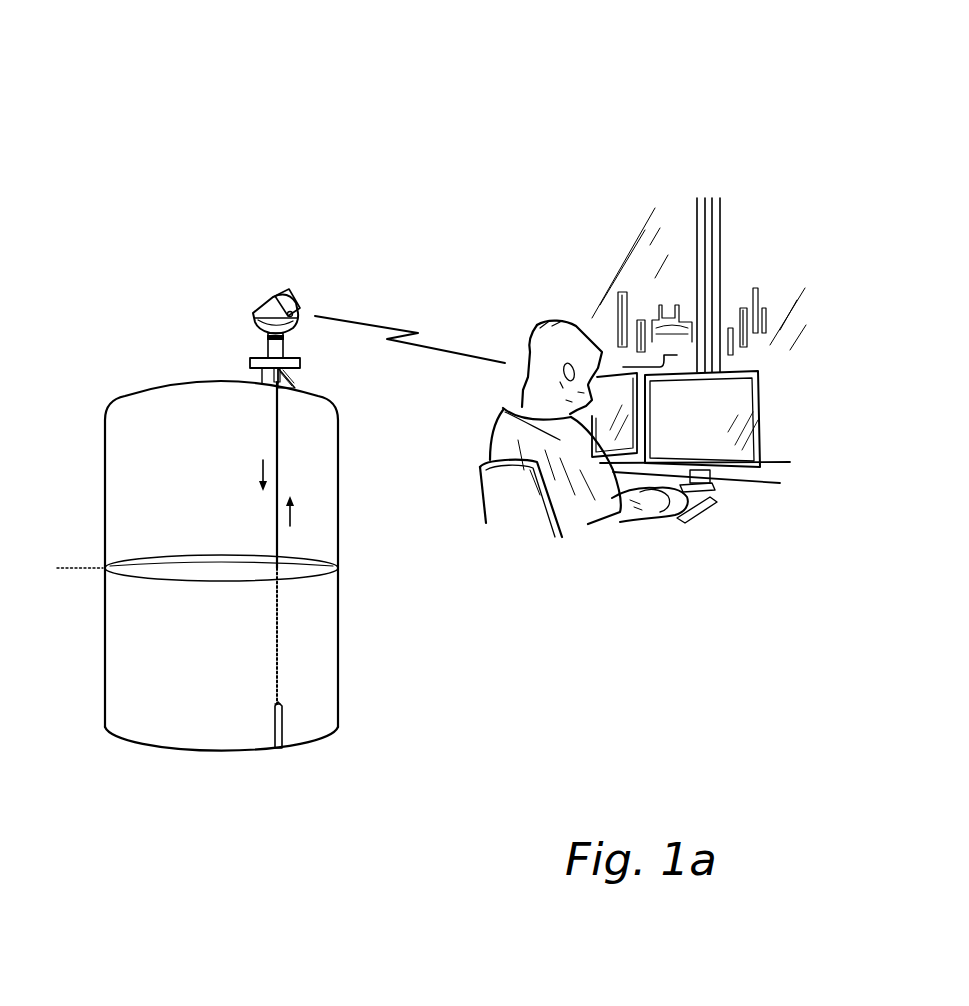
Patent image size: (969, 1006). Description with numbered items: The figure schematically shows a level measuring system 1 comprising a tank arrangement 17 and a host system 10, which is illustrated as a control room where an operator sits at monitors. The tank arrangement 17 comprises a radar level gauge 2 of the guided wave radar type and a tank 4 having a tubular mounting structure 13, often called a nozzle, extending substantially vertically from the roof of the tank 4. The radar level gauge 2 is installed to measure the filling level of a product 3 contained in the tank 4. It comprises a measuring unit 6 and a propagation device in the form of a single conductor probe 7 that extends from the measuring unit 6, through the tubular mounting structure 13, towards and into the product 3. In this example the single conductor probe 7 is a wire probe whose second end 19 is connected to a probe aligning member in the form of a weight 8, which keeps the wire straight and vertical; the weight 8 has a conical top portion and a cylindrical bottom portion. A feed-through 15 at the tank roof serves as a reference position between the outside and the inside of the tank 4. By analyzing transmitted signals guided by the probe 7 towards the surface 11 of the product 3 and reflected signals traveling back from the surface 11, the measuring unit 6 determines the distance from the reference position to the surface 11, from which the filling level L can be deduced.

The level measuring system 1 is at (572, 61).
The tank arrangement 17 is at (172, 160).
The radar level gauge 2 is at (230, 290).
The measuring unit 6 is at (270, 295).
The tubular mounting structure 13 is at (294, 377).
The probe feed-through 15 is at (281, 372).
The single conductor probe 7 is at (279, 470).
The tank 4 is at (104, 510).
The product 3 is at (200, 675).
The surface 11 is at (187, 567).
The filling level L is at (70, 571).
The second end 19 is at (270, 712).
The weight 8 is at (284, 737).
The host system 10 is at (755, 254).